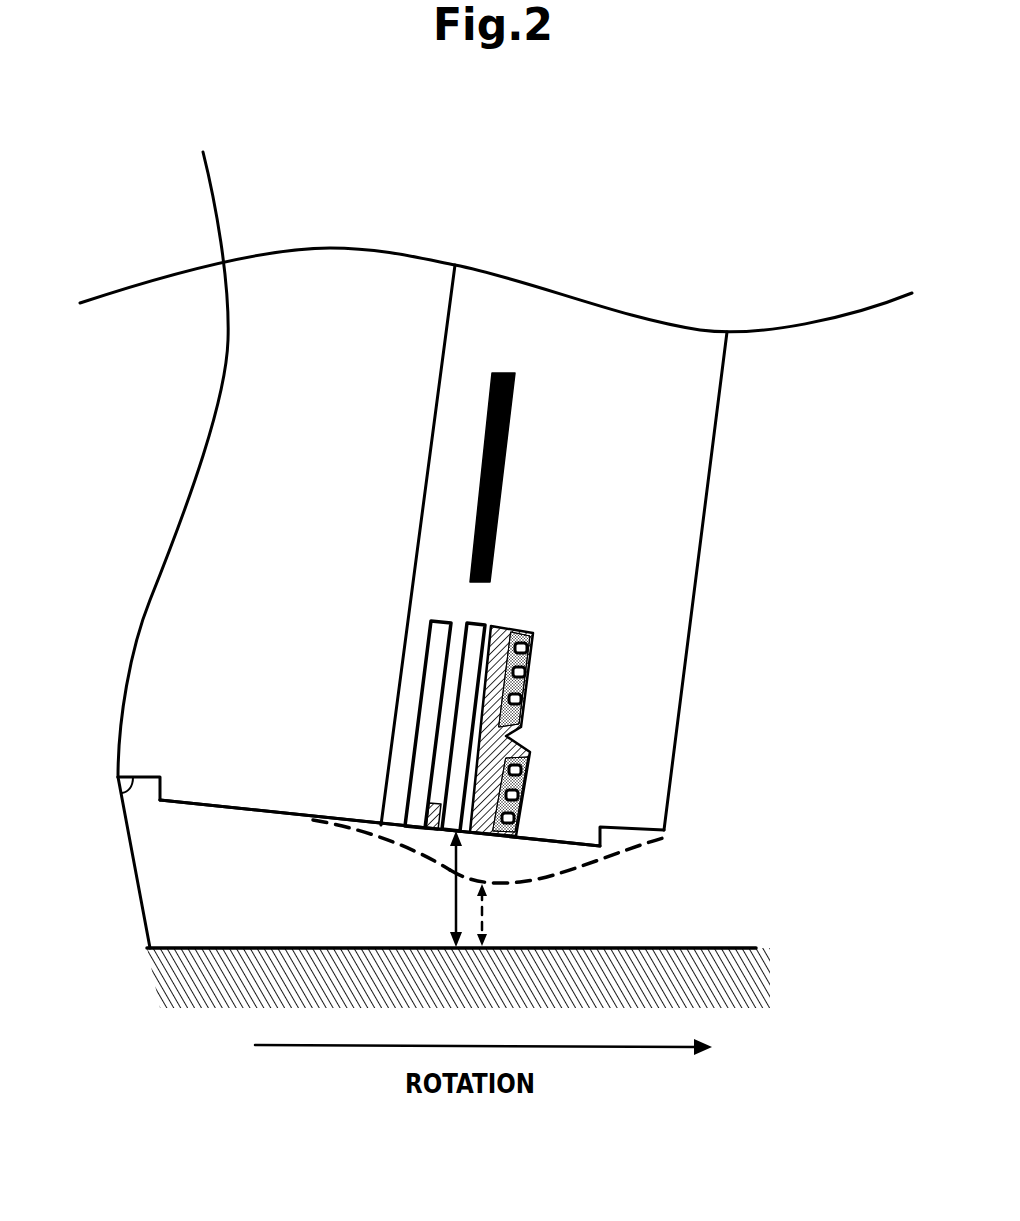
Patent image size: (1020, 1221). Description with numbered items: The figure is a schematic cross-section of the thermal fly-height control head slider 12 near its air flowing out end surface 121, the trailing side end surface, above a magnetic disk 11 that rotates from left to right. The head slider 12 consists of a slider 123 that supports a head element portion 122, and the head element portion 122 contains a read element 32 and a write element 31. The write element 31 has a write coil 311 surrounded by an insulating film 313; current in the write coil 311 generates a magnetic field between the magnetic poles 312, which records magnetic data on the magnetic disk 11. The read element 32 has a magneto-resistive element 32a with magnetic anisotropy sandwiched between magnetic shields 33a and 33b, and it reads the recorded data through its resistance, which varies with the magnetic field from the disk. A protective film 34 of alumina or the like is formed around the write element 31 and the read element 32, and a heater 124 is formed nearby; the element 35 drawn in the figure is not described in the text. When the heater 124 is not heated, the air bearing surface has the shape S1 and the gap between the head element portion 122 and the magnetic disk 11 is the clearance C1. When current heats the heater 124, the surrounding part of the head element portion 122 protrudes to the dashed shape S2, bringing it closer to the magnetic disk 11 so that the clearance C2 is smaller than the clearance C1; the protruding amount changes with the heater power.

The magnetic disk 11 is at (752, 947).
The head slider 12 is at (536, 256).
The air flowing out end surface 121 is at (717, 437).
The head element portion 122 is at (772, 580).
The slider 123 is at (117, 801).
The heater 124 is at (497, 493).
The write element 31 is at (676, 731).
The write coil 311 is at (538, 642).
The magnetic poles 312 is at (535, 786).
The insulating film 313 is at (532, 692).
The read element 32 is at (405, 838).
The magneto-resistive element 32a is at (436, 838).
The magnetic shield 33a is at (477, 620).
The magnetic shield 33b is at (430, 645).
The protective film 34 is at (462, 360).
The bottom wall 35 is at (207, 803).
The air bearing surface shape S1 is at (370, 825).
The protruding shape S2 is at (563, 873).
The clearance C1 is at (437, 889).
The clearance C2 is at (509, 915).